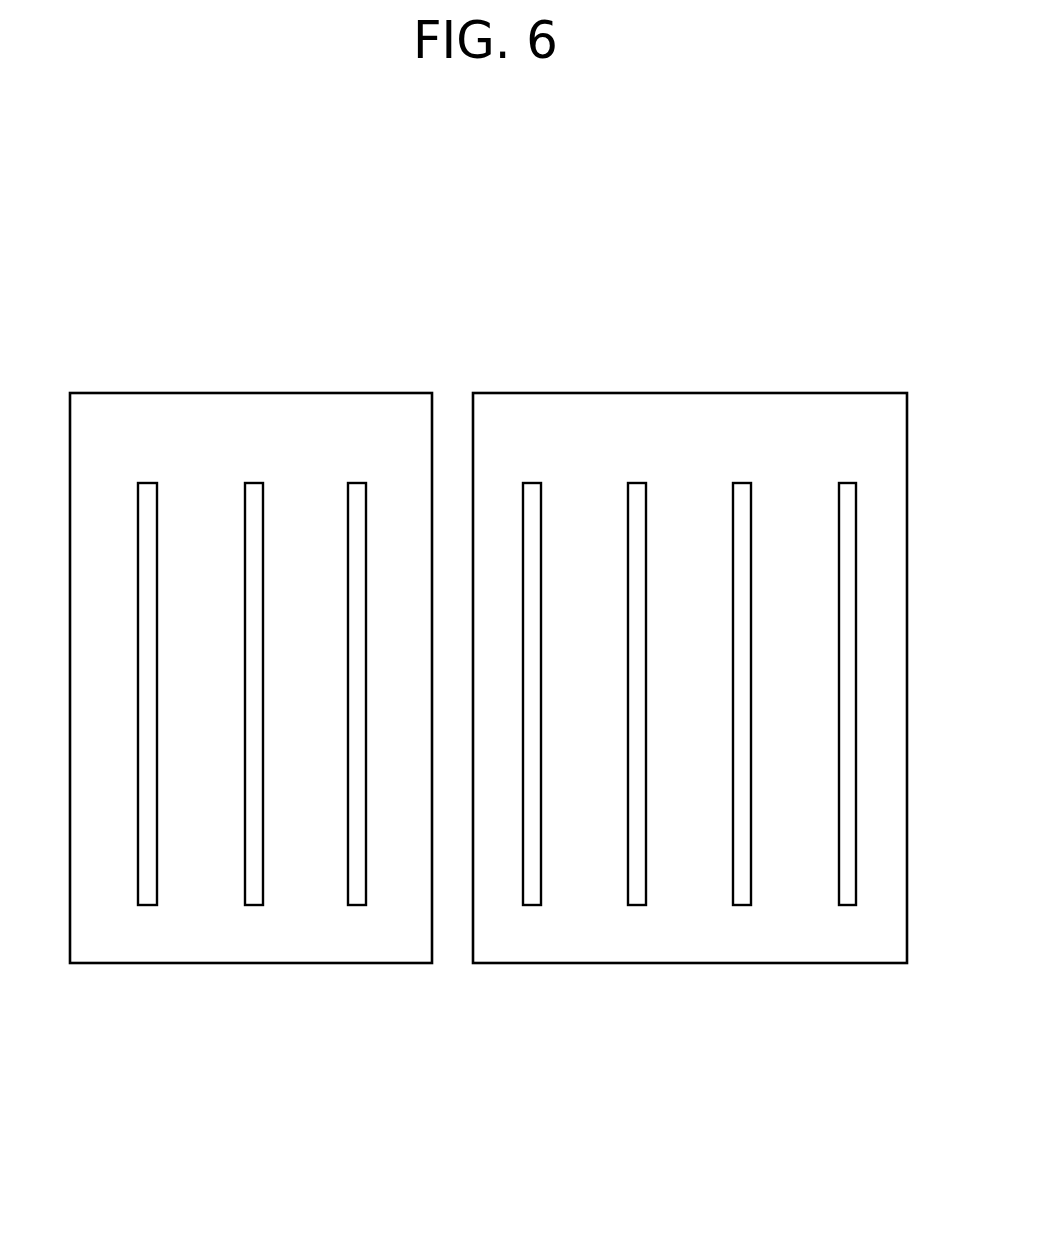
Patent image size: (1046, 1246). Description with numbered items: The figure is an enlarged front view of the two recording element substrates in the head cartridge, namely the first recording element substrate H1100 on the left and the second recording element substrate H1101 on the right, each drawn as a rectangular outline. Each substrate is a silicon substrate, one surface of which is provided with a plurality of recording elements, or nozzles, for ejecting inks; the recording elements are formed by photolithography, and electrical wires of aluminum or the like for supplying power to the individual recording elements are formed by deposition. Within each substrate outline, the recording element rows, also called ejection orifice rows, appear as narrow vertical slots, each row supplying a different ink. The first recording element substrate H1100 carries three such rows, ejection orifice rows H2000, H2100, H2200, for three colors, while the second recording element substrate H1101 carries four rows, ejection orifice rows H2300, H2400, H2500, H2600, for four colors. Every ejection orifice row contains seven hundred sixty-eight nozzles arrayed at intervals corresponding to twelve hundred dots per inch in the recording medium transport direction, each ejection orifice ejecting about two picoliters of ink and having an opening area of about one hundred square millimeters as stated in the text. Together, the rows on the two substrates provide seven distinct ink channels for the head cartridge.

The first recording element substrate H1100 is at (238, 935).
The second recording element substrate H1101 is at (715, 427).
The ejection orifice row H2000 is at (148, 482).
The ejection orifice row H2100 is at (253, 482).
The ejection orifice row H2200 is at (357, 482).
The ejection orifice row H2300 is at (530, 907).
The ejection orifice row H2400 is at (637, 907).
The ejection orifice row H2500 is at (742, 907).
The ejection orifice row H2600 is at (848, 907).